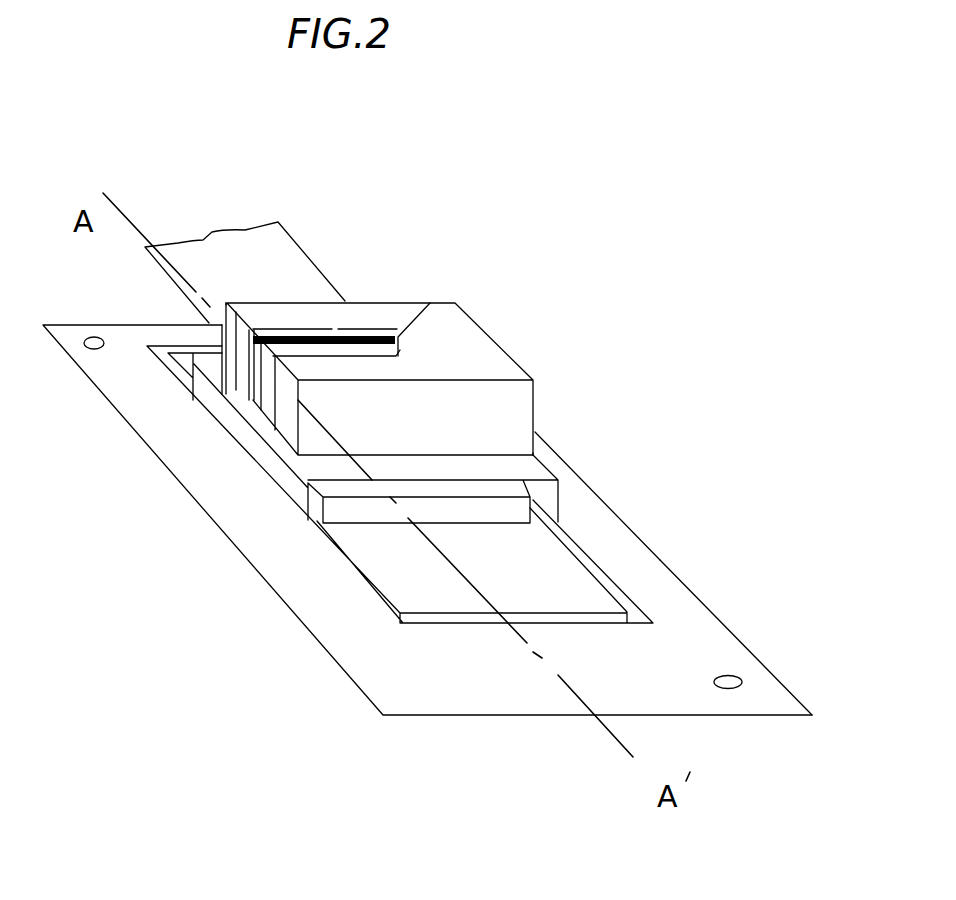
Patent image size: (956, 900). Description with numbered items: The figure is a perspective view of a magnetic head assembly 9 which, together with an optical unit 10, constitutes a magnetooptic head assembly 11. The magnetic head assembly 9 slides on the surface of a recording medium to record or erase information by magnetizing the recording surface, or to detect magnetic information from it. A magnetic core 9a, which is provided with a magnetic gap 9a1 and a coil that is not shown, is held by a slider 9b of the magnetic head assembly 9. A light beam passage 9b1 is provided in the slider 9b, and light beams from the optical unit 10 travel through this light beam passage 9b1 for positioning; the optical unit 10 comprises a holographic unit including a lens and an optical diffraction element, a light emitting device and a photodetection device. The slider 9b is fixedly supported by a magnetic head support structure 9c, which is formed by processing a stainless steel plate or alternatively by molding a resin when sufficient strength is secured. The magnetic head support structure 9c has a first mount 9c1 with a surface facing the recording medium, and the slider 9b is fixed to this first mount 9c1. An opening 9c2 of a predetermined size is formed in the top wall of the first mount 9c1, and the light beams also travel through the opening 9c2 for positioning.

The magnetic head assembly 9 is at (473, 307).
The magnetic core 9a is at (378, 332).
The magnetic gap 9a1 is at (335, 332).
The slider 9b is at (512, 360).
The light beam passage 9b1 is at (427, 303).
The magnetic head support structure 9c is at (602, 505).
The first mount 9c1 is at (540, 453).
The opening 9c2 is at (718, 628).
The optical unit 10 is at (652, 558).
The magnetooptic head assembly 11 is at (573, 300).